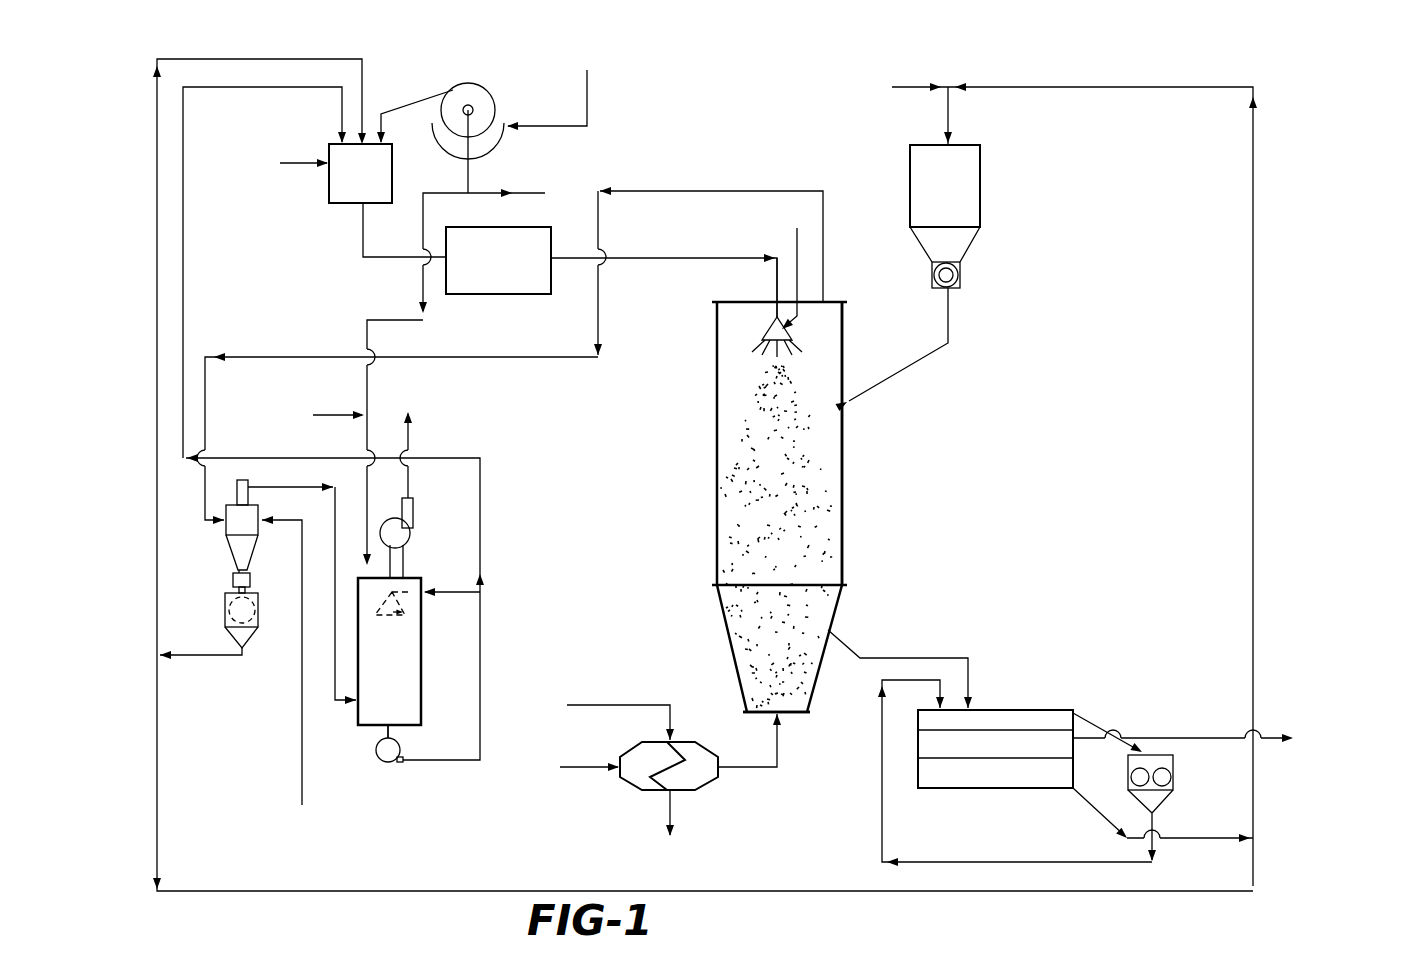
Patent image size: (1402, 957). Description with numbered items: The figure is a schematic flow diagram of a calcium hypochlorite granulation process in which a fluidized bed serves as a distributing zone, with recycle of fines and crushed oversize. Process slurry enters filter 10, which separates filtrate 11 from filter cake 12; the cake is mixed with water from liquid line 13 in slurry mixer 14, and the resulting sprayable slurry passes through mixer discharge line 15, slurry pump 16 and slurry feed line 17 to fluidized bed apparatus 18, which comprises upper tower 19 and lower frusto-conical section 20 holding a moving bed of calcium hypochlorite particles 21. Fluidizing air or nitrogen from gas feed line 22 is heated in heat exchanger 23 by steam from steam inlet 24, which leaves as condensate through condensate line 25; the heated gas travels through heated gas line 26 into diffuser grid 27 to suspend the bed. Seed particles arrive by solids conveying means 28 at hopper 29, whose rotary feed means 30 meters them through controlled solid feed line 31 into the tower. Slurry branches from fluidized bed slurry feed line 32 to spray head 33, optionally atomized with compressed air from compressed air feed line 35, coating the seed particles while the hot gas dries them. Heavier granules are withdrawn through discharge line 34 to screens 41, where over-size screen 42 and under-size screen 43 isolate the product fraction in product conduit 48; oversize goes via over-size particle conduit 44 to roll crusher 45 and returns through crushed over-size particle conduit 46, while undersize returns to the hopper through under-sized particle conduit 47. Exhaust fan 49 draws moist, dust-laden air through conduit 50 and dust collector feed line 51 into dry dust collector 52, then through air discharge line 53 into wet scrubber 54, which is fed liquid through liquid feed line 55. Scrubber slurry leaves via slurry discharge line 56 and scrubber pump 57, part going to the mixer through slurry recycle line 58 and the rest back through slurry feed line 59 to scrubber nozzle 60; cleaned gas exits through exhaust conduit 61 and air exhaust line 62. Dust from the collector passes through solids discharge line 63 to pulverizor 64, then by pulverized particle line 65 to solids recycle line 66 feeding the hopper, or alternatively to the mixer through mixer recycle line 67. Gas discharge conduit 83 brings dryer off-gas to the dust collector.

The filter 10 is at (494, 96).
The filtrate 11 is at (466, 163).
The filter cake 12 is at (412, 98).
The liquid line 13 is at (308, 158).
The slurry mixer 14 is at (328, 186).
The mixer discharge line 15 is at (381, 260).
The slurry pump 16 is at (477, 296).
The slurry feed line 17 is at (656, 260).
The fluidized bed apparatus 18 is at (717, 462).
The upper tower 19 is at (842, 459).
The lower frusto-conical section 20 is at (720, 618).
The moving bed of solid particles of calcium hypochlorite 21 is at (813, 530).
The gas feed line 22 is at (570, 773).
The heat exchanger 23 is at (708, 786).
The steam inlet 24 is at (673, 707).
The condensate line 25 is at (670, 803).
The heated gas line 26 is at (777, 754).
The diffuser grid 27 is at (800, 716).
The solids conveying means 28 is at (923, 86).
The hopper 29 is at (980, 195).
The rotary feed means 30 is at (960, 280).
The controlled solid feed line 31 is at (910, 368).
The fluidized bed slurry feed line 32 is at (777, 282).
The spray head 33 is at (783, 333).
The discharge line 34 is at (853, 651).
The compressed air feed line 35 is at (797, 250).
The screens 41 is at (1003, 708).
The over-size screen 42 is at (1032, 730).
The under-size screen 43 is at (1008, 760).
The over-size particle conduit 44 is at (1097, 720).
The roll crusher 45 is at (1173, 777).
The crushed over-size particle conduit 46 is at (943, 862).
The under-sized particle conduit 47 is at (1090, 808).
The product conduit 48 is at (1195, 735).
The exhaust fan 49 is at (413, 512).
The conduit 50 is at (823, 204).
The dust collector feed line 51 is at (205, 504).
The dry dust collector 52 is at (266, 542).
The air discharge line 53 is at (338, 702).
The wet scrubber 54 is at (362, 728).
The liquid feed line 55 is at (367, 497).
The slurry discharge line 56 is at (393, 734).
The scrubber pump 57 is at (388, 763).
The slurry recycle line 58 is at (480, 678).
The slurry feed line 59 is at (458, 595).
The scrubber nozzle 60 is at (395, 625).
The exhaust conduit 61 is at (403, 557).
The air exhaust line 62 is at (412, 436).
The solids discharge line 63 is at (233, 589).
The pulverizor 64 is at (225, 615).
The pulverized particle line 65 is at (203, 660).
The solids recycle line 66 is at (154, 753).
The mixer recycle line 67 is at (154, 332).
The gas discharge conduit 83 is at (302, 700).